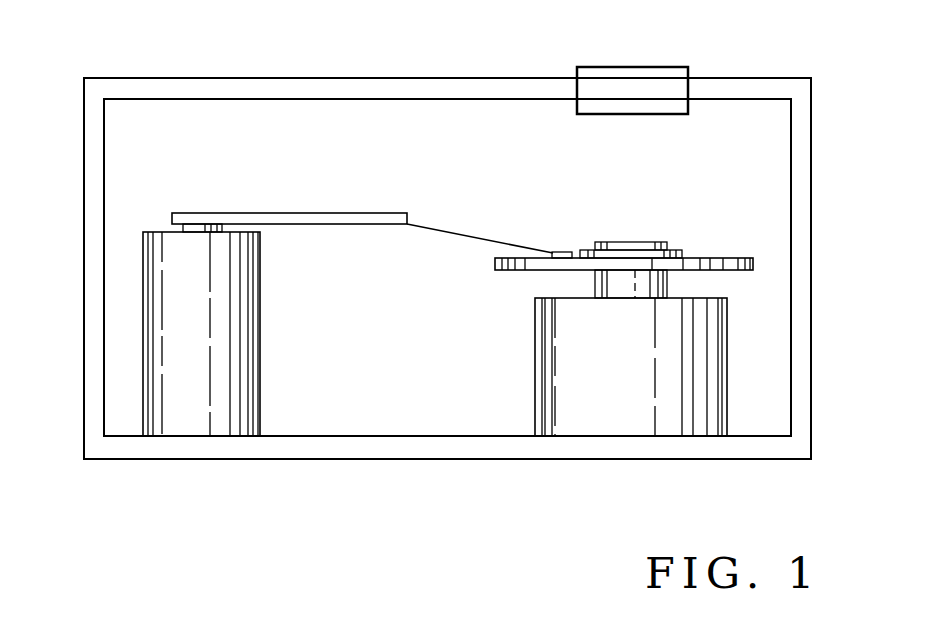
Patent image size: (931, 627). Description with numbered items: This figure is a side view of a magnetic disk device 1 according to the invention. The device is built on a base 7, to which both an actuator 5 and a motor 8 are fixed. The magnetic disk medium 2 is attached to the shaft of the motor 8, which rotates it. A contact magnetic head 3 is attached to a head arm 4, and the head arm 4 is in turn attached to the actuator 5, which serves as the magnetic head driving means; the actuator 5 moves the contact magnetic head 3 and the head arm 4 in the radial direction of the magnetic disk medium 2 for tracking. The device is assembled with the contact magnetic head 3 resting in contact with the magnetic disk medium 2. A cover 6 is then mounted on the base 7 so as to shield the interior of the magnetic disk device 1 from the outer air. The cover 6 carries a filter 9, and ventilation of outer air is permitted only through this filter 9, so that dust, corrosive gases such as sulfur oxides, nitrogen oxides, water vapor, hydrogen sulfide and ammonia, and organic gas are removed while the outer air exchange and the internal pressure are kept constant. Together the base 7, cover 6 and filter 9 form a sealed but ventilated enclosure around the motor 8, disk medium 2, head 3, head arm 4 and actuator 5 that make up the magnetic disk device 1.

The magnetic disk device 1 is at (457, 472).
The magnetic disk medium 2 is at (700, 257).
The contact magnetic head 3 is at (565, 243).
The head arm 4 is at (204, 212).
The actuator 5 is at (190, 417).
The cover 6 is at (336, 88).
The base 7 is at (400, 444).
The motor 8 is at (620, 420).
The filter 9 is at (636, 77).